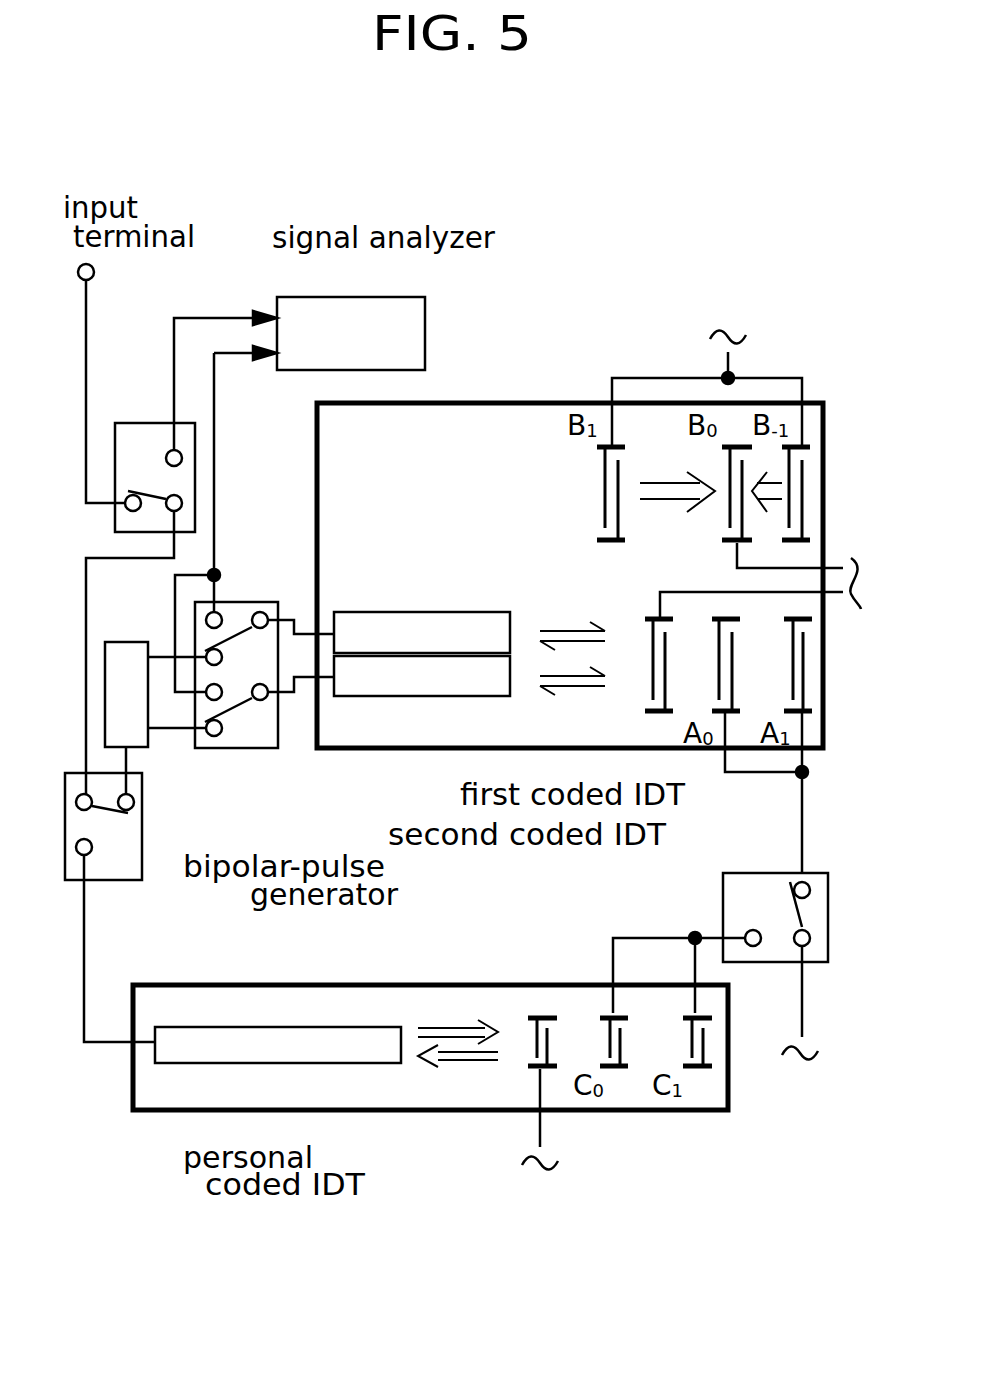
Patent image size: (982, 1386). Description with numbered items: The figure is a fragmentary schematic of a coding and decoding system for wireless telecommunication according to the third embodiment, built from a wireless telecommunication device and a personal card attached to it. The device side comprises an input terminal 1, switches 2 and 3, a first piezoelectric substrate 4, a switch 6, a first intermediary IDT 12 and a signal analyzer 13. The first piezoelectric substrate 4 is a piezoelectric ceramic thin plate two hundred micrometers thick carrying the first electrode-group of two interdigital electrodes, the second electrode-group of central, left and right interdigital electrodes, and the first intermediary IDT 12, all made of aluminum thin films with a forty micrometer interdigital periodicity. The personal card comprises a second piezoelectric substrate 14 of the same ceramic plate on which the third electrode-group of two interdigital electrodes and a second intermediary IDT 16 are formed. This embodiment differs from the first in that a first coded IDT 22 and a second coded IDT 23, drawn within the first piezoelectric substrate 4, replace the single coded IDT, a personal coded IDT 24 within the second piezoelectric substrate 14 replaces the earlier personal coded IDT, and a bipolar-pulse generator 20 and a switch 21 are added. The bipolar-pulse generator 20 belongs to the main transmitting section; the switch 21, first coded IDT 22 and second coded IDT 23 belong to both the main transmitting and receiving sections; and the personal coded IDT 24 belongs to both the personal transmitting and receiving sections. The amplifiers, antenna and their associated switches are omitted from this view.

The input terminal 1 is at (101, 273).
The switch 2 is at (130, 440).
The switch 3 is at (122, 872).
The first piezoelectric substrate 4 is at (494, 416).
The switch 6 is at (758, 873).
The first intermediary IDT 12 is at (710, 685).
The signal analyzer 13 is at (295, 258).
The second piezoelectric substrate 14 is at (508, 997).
The second intermediary IDT 16 is at (522, 1062).
The bipolar-pulse generator 20 is at (205, 843).
The switch 21 is at (261, 740).
The first coded IDT 22 is at (475, 770).
The second coded IDT 23 is at (392, 818).
The personal coded IDT 24 is at (203, 1147).